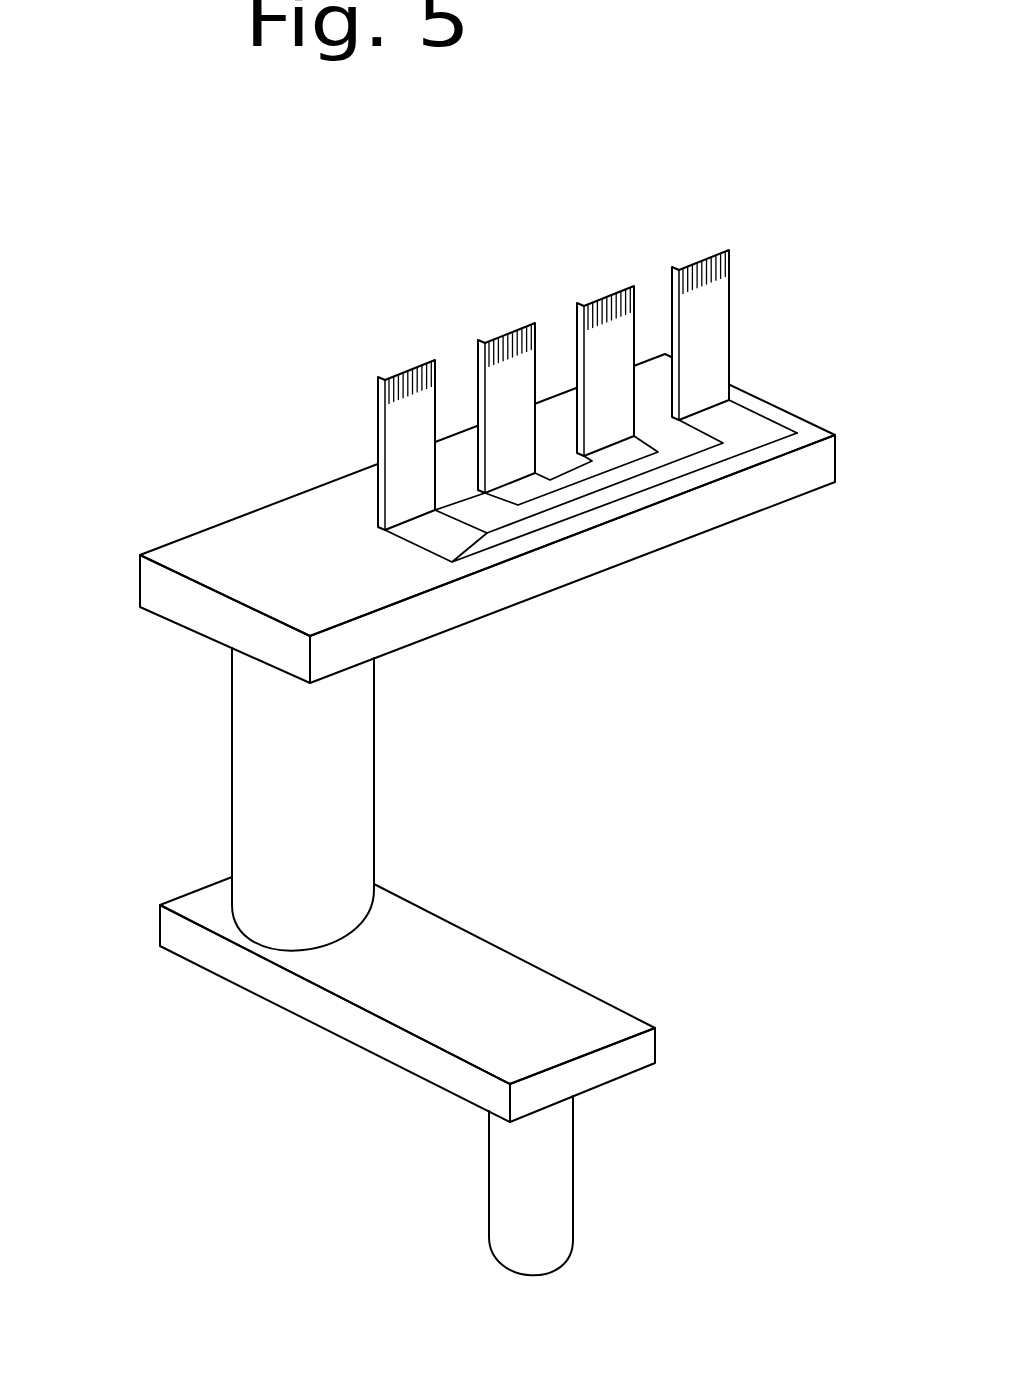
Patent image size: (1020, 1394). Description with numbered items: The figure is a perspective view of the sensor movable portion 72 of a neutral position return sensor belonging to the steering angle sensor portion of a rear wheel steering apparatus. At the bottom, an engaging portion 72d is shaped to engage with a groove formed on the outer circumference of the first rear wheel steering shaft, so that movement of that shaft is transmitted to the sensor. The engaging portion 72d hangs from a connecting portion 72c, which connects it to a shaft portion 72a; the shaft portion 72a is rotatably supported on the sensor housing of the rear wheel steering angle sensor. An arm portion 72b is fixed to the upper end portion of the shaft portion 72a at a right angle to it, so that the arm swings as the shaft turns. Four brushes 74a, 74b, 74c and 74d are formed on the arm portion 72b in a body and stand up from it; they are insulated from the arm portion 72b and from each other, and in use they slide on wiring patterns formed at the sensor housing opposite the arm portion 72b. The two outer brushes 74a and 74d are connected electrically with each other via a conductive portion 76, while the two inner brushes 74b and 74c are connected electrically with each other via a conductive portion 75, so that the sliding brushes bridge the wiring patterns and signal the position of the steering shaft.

The sensor movable portion 72 is at (268, 1018).
The shaft portion 72a is at (247, 787).
The arm portion 72b is at (252, 527).
The connecting portion 72c is at (507, 956).
The engaging portion 72d is at (566, 1201).
The brush 74a is at (402, 372).
The brush 74b is at (505, 330).
The brush 74c is at (602, 292).
The brush 74d is at (700, 255).
The conductive portion 75 is at (635, 453).
The conductive portion 76 is at (763, 433).